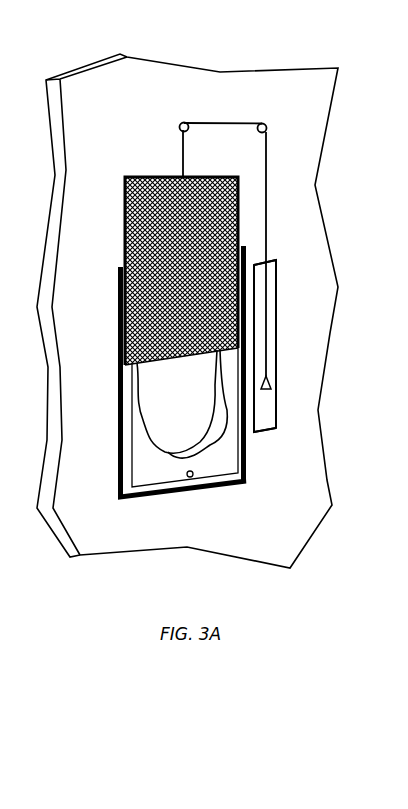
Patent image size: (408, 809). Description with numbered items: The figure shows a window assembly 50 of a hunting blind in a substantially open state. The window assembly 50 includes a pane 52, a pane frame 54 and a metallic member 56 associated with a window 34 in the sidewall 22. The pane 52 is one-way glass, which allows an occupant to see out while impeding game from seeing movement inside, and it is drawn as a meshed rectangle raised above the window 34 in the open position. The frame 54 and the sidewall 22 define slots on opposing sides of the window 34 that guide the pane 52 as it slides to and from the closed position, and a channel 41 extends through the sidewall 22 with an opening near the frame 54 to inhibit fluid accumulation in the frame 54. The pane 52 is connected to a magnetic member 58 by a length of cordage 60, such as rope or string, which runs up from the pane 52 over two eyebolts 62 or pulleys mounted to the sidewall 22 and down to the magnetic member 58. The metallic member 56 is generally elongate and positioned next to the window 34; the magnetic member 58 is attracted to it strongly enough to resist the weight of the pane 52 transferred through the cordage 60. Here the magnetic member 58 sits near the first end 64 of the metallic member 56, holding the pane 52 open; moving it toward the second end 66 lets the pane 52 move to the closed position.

The sidewall 22 is at (218, 72).
The window 34 is at (190, 408).
The channel 41 is at (186, 472).
The window assembly 50 is at (115, 170).
The pane 52 is at (165, 177).
The pane frame 54 is at (118, 352).
The metallic member 56 is at (277, 336).
The magnetic member 58 is at (270, 385).
The cordage 60 is at (267, 175).
The eyebolts 62 is at (187, 122).
The first end 64 is at (265, 432).
The second end 66 is at (275, 262).